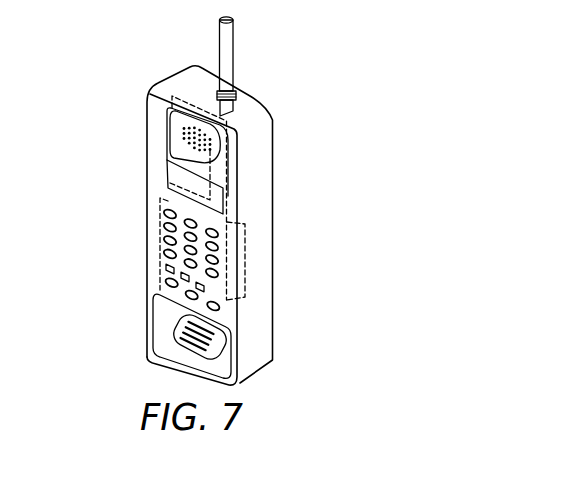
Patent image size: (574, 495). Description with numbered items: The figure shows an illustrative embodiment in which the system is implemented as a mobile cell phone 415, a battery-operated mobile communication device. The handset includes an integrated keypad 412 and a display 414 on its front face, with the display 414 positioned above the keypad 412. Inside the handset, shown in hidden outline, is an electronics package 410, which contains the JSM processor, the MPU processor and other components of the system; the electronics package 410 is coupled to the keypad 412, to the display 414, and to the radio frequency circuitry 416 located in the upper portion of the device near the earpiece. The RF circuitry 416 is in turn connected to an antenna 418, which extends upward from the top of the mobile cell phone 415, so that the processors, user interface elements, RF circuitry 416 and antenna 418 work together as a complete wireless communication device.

The electronics package 410 is at (244, 250).
The keypad 412 is at (168, 240).
The display 414 is at (168, 186).
The mobile cell phone 415 is at (262, 337).
The radio frequency (RF) circuitry 416 is at (180, 153).
The antenna 418 is at (235, 44).